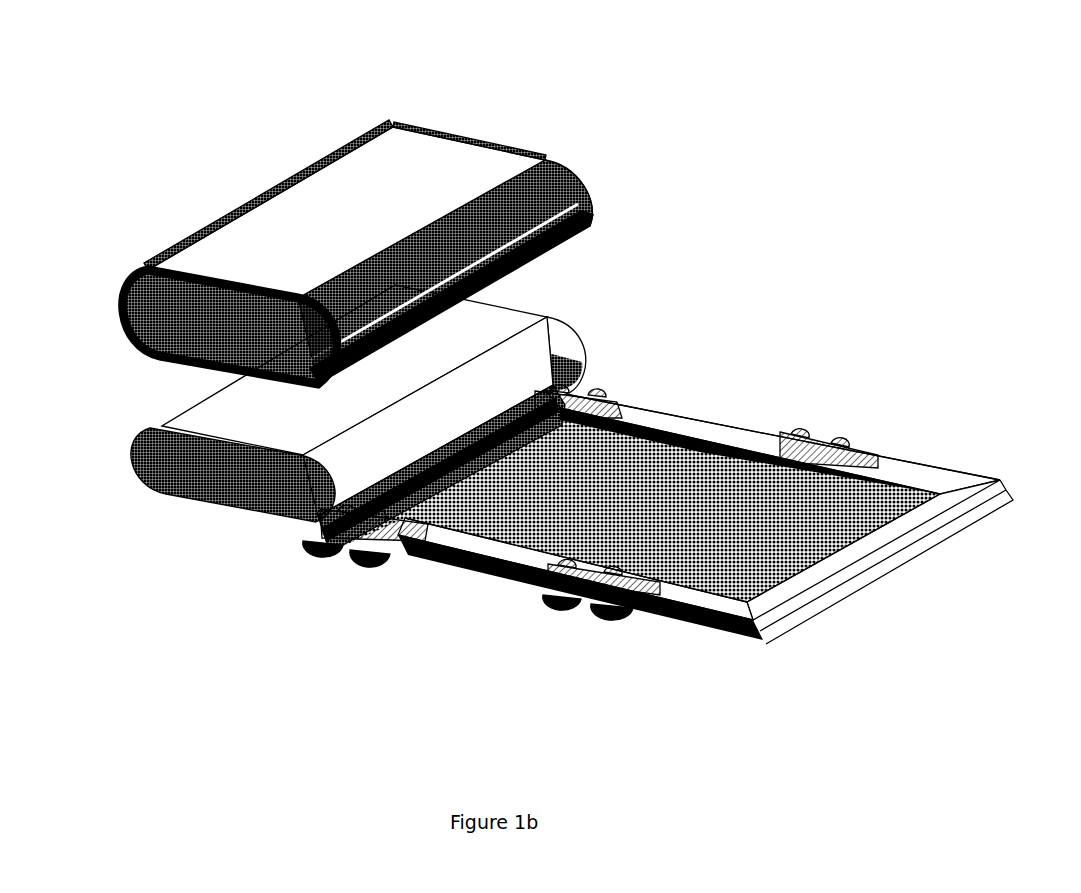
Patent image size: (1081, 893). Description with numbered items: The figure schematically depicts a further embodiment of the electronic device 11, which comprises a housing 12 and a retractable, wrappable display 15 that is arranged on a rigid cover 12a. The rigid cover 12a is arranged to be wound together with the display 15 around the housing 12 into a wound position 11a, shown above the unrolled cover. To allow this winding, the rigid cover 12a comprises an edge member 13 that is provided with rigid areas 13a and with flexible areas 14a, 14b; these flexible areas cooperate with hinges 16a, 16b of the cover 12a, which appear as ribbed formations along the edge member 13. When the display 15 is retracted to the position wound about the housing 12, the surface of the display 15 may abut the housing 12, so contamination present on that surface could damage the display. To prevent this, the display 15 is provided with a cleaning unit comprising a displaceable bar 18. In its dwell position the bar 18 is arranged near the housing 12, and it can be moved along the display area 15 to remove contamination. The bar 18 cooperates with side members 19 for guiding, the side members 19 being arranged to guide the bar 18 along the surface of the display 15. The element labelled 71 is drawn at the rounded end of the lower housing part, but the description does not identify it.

The electronic device 11 is at (552, 351).
The wound position 11a is at (205, 208).
The housing 12 is at (331, 337).
The rigid cover 12a is at (988, 498).
The edge member 13 is at (665, 523).
The rigid areas 13a is at (707, 420).
The flexible areas 14a is at (617, 400).
The flexible areas 14b is at (800, 443).
The display 15 is at (747, 563).
The hinges 16a is at (588, 207).
The hinges 16b is at (347, 157).
The displaceable bar 18 is at (470, 455).
The side members 19 is at (720, 450).
The housing end cap 71 is at (548, 350).